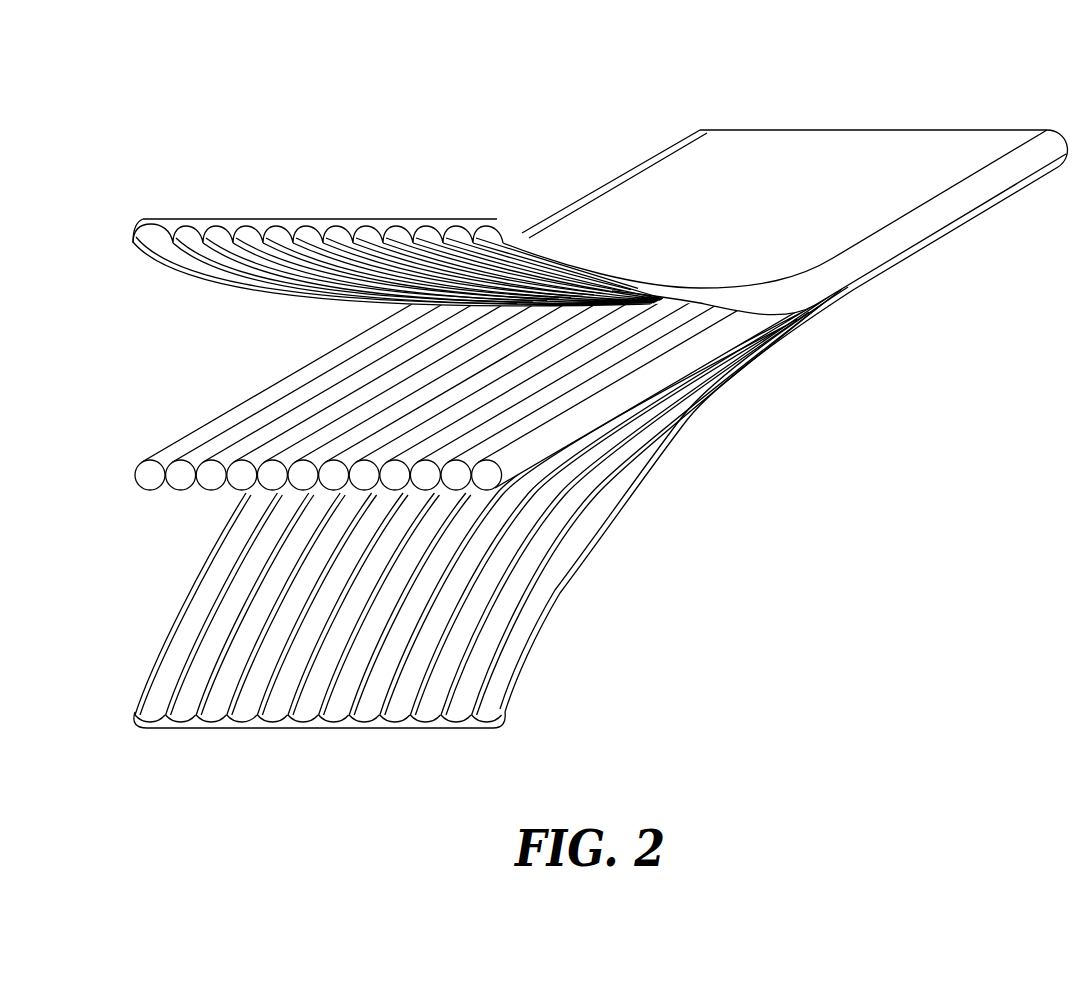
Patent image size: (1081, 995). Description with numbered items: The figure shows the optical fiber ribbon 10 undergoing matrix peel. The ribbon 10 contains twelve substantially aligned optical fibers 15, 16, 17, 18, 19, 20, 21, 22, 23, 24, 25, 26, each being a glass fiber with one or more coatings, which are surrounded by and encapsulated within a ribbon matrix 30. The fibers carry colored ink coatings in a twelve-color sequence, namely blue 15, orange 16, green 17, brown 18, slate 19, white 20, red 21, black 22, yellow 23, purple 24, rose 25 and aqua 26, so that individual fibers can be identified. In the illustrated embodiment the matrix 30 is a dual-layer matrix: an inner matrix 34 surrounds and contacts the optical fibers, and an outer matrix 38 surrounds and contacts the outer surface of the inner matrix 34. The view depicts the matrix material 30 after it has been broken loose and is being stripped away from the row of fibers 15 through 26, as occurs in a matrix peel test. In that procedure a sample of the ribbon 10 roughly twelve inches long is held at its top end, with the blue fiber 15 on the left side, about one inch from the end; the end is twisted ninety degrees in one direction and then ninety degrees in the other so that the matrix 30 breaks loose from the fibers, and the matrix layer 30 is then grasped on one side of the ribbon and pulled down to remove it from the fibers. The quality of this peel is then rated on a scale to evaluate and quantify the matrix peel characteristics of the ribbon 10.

The optical fiber ribbon 10 is at (226, 118).
The optical fiber 15 is at (151, 462).
The optical fiber 16 is at (182, 462).
The optical fiber 17 is at (212, 462).
The optical fiber 18 is at (243, 462).
The optical fiber 19 is at (273, 462).
The optical fiber 20 is at (304, 462).
The optical fiber 21 is at (335, 462).
The optical fiber 22 is at (365, 462).
The optical fiber 23 is at (396, 462).
The optical fiber 24 is at (426, 462).
The optical fiber 25 is at (457, 462).
The optical fiber 26 is at (488, 462).
The ribbon matrix 30 is at (622, 146).
The inner matrix 34 is at (178, 256).
The outer matrix 38 is at (577, 217).